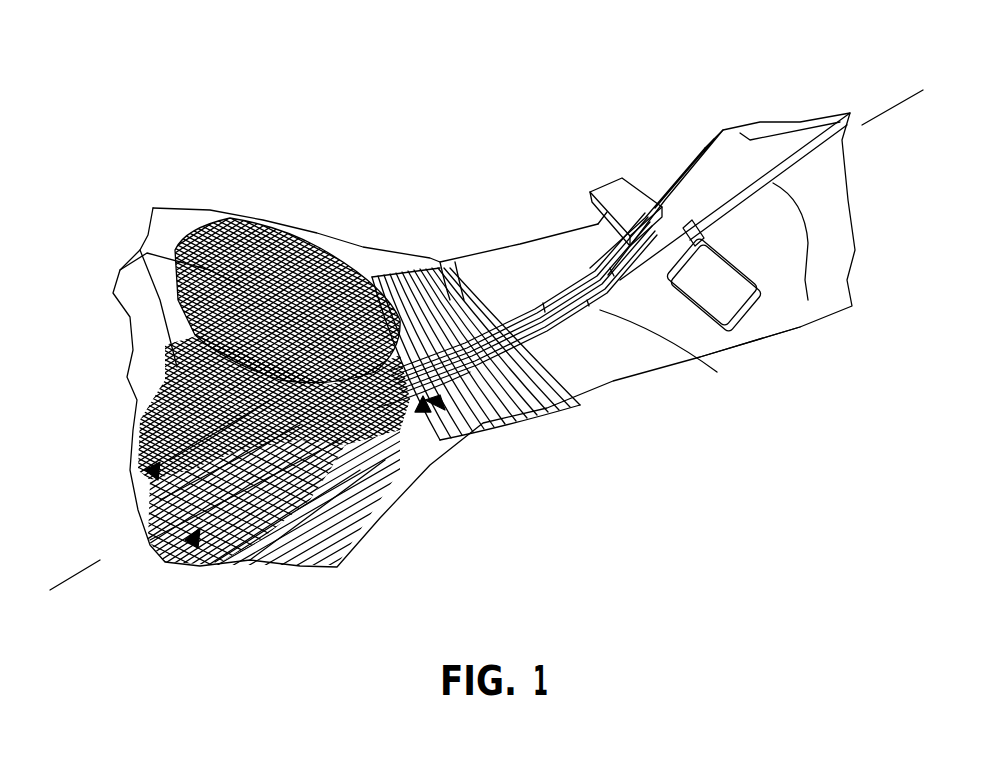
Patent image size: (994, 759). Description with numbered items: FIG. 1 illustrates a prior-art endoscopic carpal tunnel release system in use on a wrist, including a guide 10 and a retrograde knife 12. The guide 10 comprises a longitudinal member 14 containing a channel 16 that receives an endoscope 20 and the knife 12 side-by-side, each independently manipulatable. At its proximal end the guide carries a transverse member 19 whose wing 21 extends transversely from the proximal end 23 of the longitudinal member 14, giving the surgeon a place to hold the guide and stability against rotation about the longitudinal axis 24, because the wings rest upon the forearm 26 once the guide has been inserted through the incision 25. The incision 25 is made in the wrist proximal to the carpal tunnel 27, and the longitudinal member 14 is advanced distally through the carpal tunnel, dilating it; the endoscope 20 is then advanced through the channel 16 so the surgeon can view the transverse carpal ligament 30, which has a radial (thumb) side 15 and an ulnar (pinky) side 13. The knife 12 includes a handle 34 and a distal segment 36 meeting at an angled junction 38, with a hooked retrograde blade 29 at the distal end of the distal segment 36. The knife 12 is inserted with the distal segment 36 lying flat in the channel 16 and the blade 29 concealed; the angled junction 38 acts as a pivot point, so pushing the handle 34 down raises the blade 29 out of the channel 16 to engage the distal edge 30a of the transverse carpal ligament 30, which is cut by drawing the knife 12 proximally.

The guide 10 is at (578, 318).
The retrograde knife 12 is at (705, 143).
The ulnar side 13 is at (190, 538).
The longitudinal member 14 is at (543, 303).
The radial side 15 is at (150, 475).
The channel 16 is at (669, 353).
The transverse member 19 is at (607, 210).
The endoscope 20 is at (802, 282).
The wing 21 is at (633, 190).
The proximal end 23 is at (703, 233).
The longitudinal axis 24 is at (888, 107).
The incision 25 is at (493, 310).
The forearm 26 is at (847, 283).
The carpal tunnel 27 is at (423, 412).
The retrograde blade 29 is at (467, 425).
The transverse carpal ligament 30 is at (428, 336).
The distal edge 30a is at (367, 297).
The handle 34 is at (747, 133).
The distal segment 36 is at (587, 300).
The angled junction 38 is at (610, 268).